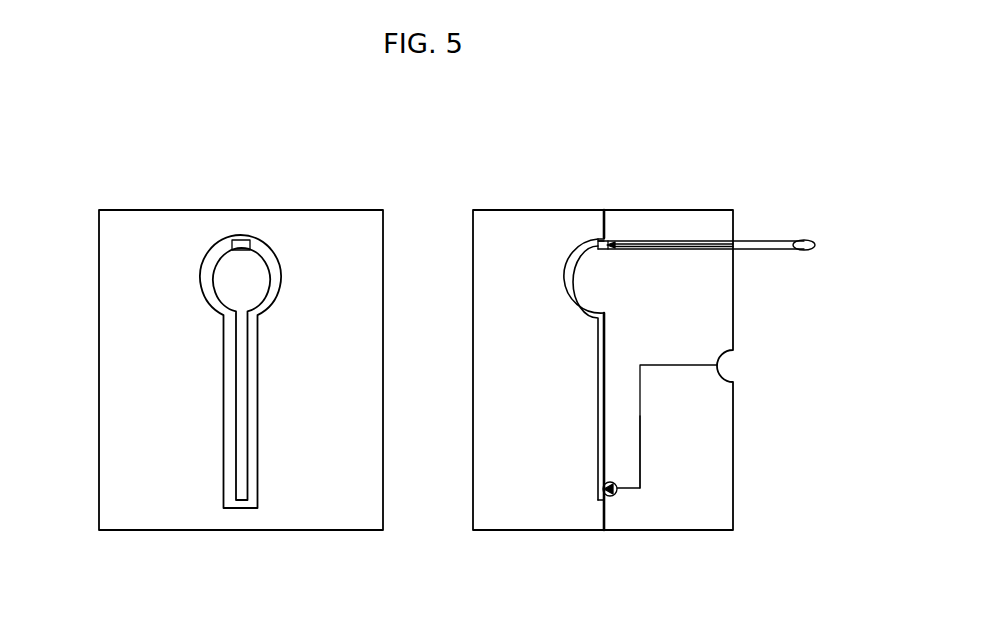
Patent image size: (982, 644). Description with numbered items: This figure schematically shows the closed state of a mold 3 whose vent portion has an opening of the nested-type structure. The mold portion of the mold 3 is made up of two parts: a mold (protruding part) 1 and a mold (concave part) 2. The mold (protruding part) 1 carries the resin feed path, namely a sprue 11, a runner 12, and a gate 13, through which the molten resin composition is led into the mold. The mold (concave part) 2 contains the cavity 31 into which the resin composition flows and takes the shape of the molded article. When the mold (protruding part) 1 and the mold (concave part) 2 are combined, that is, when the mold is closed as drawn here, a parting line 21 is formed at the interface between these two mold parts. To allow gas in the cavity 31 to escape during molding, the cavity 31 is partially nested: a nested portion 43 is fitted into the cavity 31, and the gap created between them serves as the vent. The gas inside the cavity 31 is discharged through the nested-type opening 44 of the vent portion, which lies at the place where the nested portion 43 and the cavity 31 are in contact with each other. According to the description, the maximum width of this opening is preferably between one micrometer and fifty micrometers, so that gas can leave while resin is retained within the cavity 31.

The mold (protruding part) 1 is at (733, 228).
The mold (concave part) 2 is at (472, 238).
The mold 3 is at (99, 250).
The sprue 11 is at (683, 364).
The runner 12 is at (640, 416).
The gate 13 is at (608, 497).
The parting line 21 is at (214, 295).
The cavity 31 is at (566, 276).
The nested portion 43 is at (241, 247).
The opening 44 is at (598, 238).